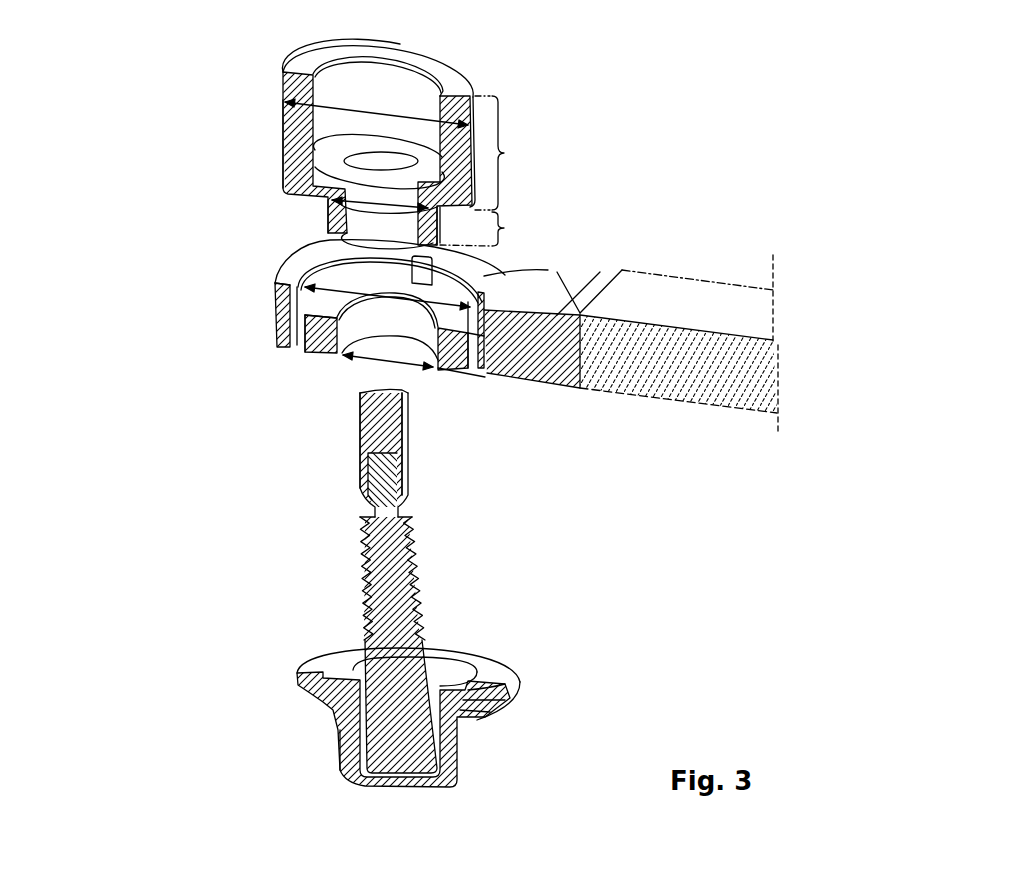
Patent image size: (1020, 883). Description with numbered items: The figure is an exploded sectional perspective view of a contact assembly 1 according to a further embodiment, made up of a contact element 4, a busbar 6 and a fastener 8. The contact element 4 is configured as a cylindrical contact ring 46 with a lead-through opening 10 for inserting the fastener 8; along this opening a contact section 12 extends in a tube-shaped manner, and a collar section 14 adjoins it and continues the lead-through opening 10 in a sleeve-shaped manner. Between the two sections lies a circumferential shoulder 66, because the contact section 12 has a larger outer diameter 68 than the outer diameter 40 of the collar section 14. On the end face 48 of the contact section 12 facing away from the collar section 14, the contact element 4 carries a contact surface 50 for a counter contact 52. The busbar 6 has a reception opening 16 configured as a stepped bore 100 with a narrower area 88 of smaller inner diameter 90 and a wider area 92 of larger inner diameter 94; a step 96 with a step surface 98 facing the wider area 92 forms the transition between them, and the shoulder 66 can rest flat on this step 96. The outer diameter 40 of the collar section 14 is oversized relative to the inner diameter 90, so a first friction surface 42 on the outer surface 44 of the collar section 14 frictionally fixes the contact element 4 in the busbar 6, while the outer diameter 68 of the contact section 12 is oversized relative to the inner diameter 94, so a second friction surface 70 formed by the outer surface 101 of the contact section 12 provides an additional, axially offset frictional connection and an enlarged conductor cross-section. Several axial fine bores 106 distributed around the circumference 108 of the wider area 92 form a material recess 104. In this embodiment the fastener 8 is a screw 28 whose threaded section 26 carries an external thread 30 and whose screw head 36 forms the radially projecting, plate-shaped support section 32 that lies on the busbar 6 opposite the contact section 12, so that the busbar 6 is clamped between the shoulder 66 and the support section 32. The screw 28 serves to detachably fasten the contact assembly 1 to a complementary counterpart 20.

The contact assembly 1 is at (435, 403).
The contact element 4 is at (317, 130).
The busbar 6 is at (631, 322).
The fastener 8 is at (355, 580).
The lead-through opening 10 is at (329, 130).
The contact section 12 is at (504, 153).
The collar section 14 is at (487, 231).
The reception opening 16 is at (414, 568).
The counterpart 20 is at (355, 580).
The threaded section 26 is at (362, 572).
The screw 28 is at (355, 580).
The external thread 30 is at (424, 577).
The support section 32 is at (457, 722).
The screw head 36 is at (490, 687).
The outer diameter 40 is at (378, 203).
The first friction surface 42 is at (281, 222).
The outer surface 44 is at (328, 216).
The contact ring 46 is at (317, 130).
The end face 48 is at (290, 51).
The contact surface 50 is at (290, 51).
The counter contact 52 is at (317, 130).
The shoulder 66 is at (297, 202).
The outer diameter 68 is at (367, 112).
The second friction surface 70 is at (282, 148).
The narrower area 88 is at (350, 334).
The inner diameter 90 is at (407, 363).
The wider area 92 is at (350, 334).
The inner diameter 94 is at (473, 345).
The step 96 is at (303, 350).
The step surface 98 is at (443, 292).
The stepped bore 100 is at (414, 568).
The outer surface 101 is at (283, 97).
The material recess 104 is at (358, 358).
The axial fine bore 106 is at (305, 242).
The circumference 108 is at (557, 313).